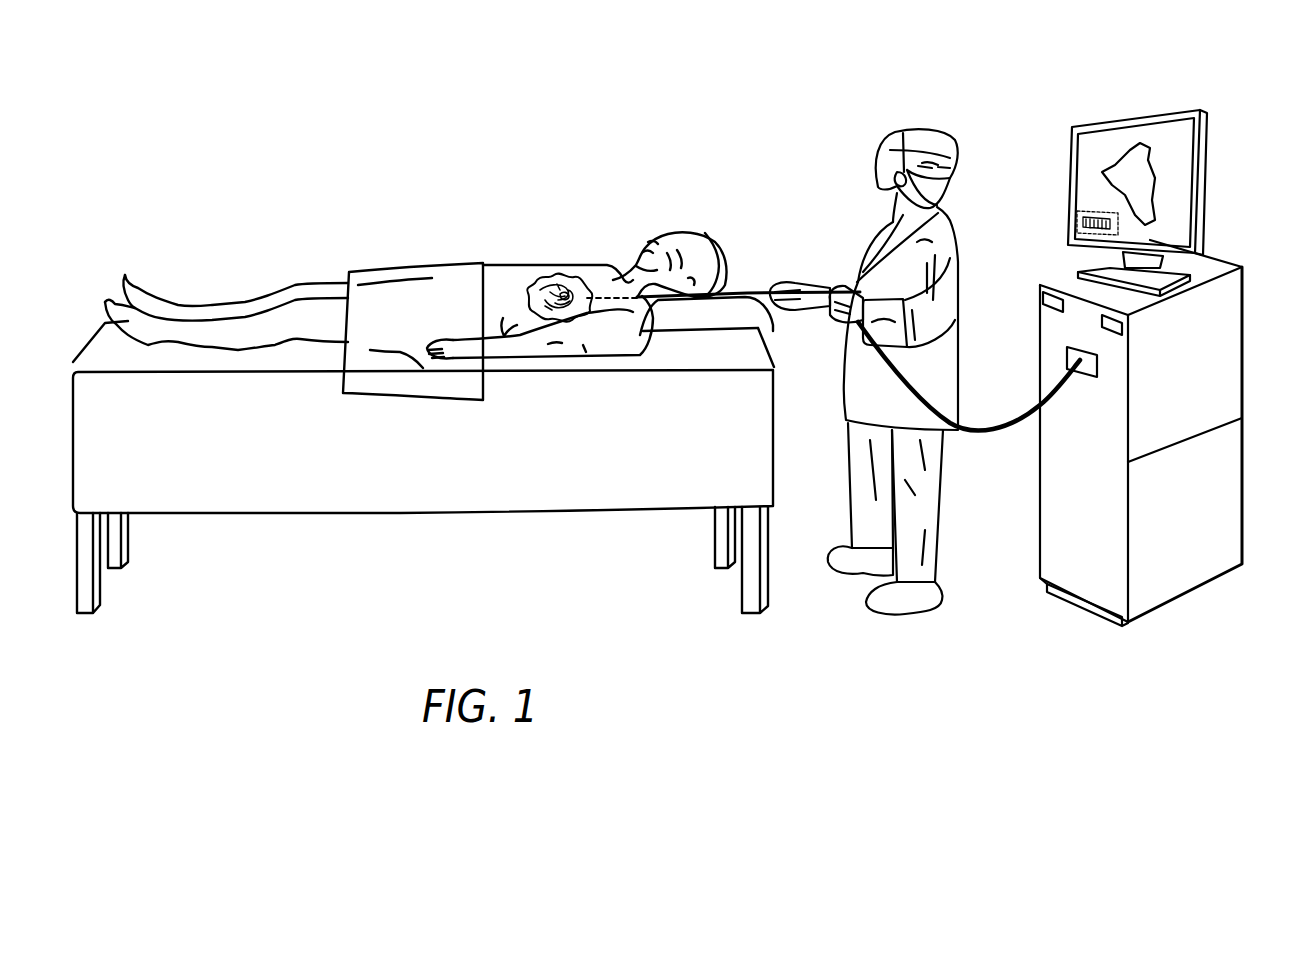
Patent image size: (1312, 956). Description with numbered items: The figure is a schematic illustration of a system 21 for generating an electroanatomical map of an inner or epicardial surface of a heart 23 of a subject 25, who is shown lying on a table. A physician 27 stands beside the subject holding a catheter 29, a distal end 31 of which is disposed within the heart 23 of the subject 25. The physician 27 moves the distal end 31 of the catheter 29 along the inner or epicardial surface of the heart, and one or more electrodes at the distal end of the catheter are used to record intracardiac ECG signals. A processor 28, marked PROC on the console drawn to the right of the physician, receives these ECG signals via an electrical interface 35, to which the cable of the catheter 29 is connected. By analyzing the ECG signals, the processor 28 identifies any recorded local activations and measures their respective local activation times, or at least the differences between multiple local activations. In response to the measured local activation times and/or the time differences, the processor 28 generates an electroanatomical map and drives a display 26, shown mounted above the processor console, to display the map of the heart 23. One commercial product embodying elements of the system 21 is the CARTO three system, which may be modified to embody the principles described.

The system 21 is at (306, 140).
The heart 23 is at (537, 283).
The subject 25 is at (684, 232).
The display 26 is at (1126, 122).
The physician 27 is at (876, 170).
The processor 28 is at (1238, 337).
The catheter 29 is at (763, 288).
The distal end 31 is at (568, 284).
The electrical interface 35 is at (1086, 378).